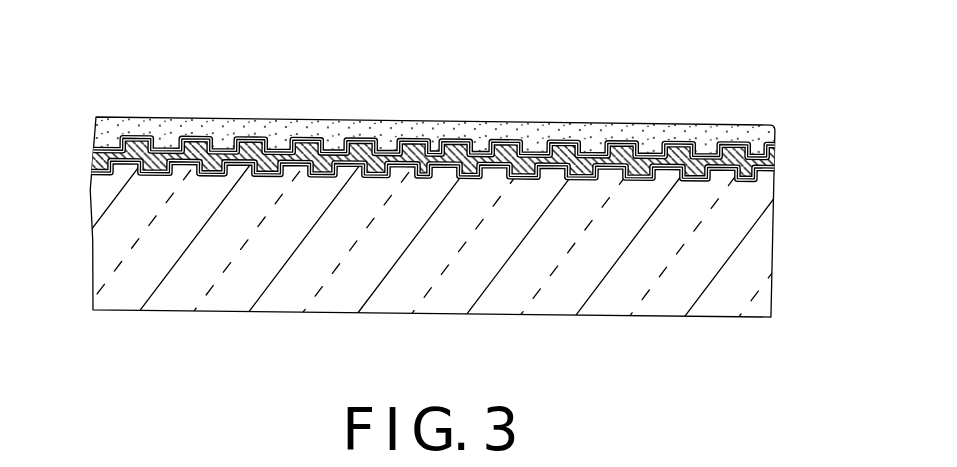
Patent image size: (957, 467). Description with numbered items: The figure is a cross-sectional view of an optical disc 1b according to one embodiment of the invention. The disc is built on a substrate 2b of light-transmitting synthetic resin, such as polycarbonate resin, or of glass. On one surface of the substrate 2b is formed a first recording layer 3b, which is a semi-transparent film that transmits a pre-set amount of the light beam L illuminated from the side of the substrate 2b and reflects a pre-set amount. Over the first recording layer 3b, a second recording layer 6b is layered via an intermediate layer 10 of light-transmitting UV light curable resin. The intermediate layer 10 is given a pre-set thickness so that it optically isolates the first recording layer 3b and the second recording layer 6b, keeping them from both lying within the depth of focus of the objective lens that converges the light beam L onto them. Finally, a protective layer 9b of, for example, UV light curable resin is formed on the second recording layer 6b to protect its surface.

The optical disc 1b is at (449, 168).
The substrate 2b is at (747, 265).
The first recording layer 3b is at (775, 203).
The intermediate layer 10 is at (775, 168).
The second recording layer 6b is at (477, 196).
The protective layer 9b is at (762, 126).
The light beam L is at (619, 340).